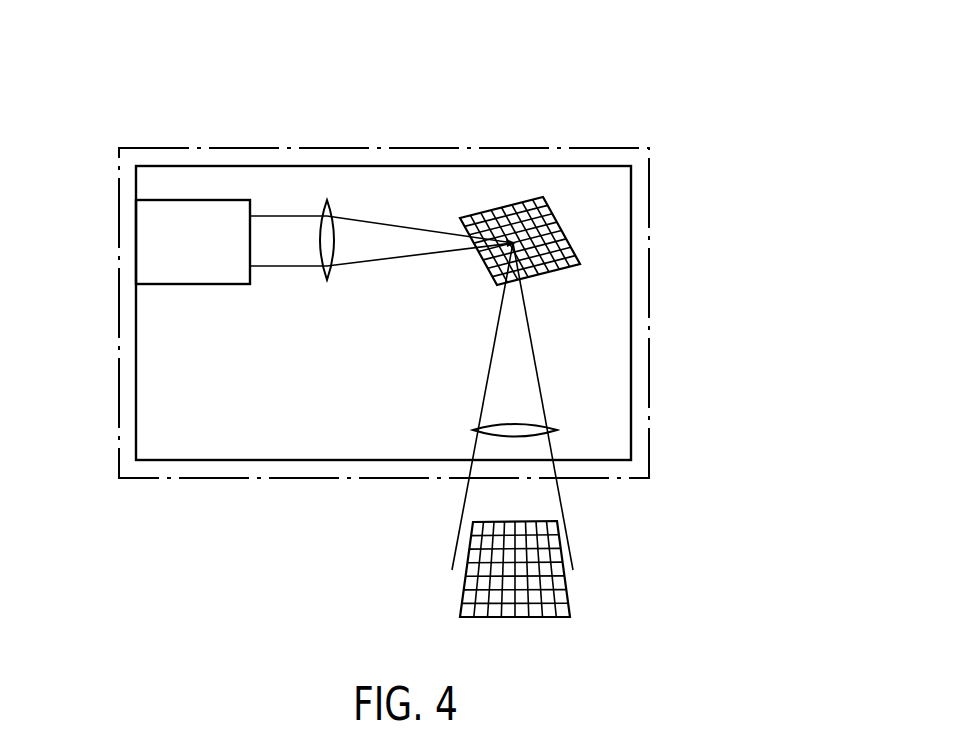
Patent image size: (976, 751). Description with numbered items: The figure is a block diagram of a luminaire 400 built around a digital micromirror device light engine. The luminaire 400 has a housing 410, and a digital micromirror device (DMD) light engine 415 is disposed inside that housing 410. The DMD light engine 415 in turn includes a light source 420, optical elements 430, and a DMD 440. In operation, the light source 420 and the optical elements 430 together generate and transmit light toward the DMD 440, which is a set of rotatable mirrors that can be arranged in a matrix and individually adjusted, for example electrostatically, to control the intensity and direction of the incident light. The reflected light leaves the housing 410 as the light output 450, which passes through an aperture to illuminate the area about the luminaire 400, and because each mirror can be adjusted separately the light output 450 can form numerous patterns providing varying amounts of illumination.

The luminaire 400 is at (168, 58).
The housing 410 is at (307, 148).
The digital micromirror device (DMD) light engine 415 is at (778, 327).
The light source 420 is at (192, 273).
The optical elements 430 is at (500, 420).
The DMD 440 is at (611, 132).
The light output 450 is at (563, 497).